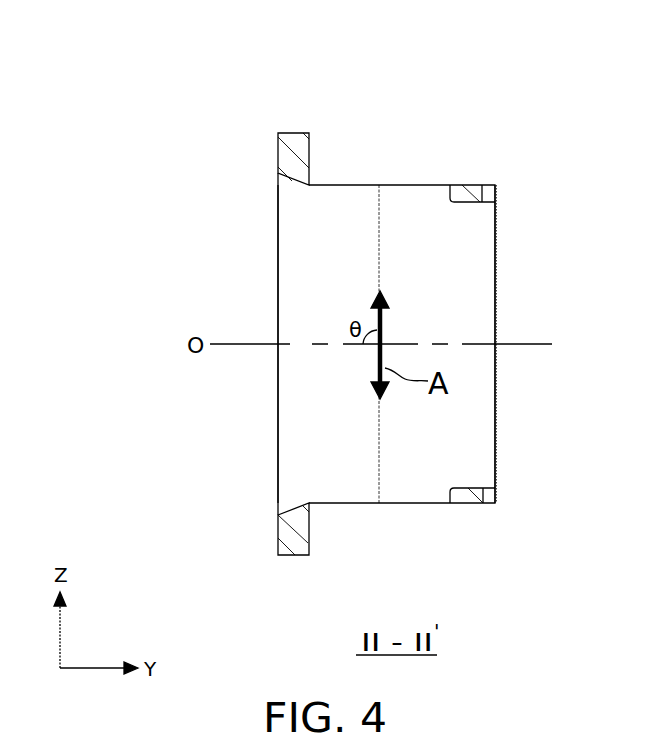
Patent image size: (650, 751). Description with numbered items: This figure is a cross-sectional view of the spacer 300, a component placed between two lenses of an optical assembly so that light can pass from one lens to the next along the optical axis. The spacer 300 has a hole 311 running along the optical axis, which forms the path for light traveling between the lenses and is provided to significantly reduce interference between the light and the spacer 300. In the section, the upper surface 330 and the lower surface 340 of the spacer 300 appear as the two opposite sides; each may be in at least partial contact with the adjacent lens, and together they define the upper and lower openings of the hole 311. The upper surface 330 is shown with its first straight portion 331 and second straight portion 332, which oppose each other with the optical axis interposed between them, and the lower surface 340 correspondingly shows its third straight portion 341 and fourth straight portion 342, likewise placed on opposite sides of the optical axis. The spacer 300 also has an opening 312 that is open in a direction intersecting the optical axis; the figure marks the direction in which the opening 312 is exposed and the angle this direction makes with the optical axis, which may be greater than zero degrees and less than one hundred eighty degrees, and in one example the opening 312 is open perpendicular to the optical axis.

The spacer 300 is at (414, 50).
The upper surface 330 is at (278, 245).
The first straight portion 331 is at (278, 150).
The second straight portion 332 is at (278, 538).
The hole 311 is at (317, 290).
The opening 312 is at (383, 194).
The lower surface 340 is at (496, 253).
The third straight portion 341 is at (483, 192).
The fourth straight portion 342 is at (492, 504).